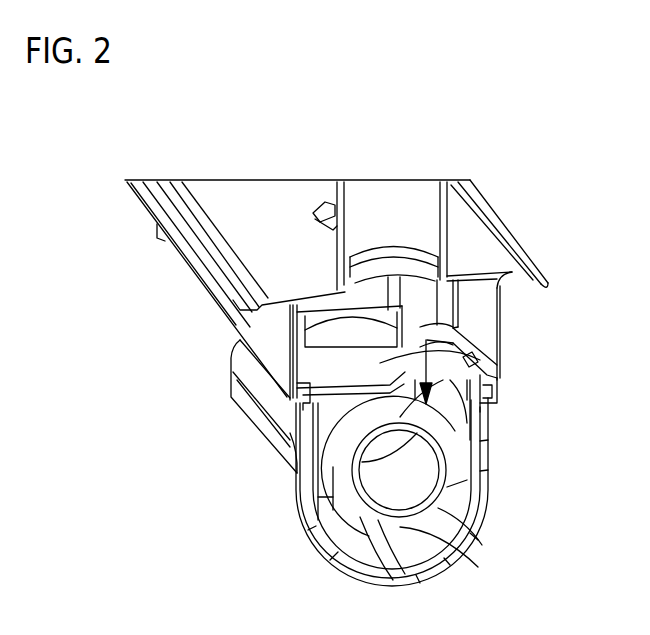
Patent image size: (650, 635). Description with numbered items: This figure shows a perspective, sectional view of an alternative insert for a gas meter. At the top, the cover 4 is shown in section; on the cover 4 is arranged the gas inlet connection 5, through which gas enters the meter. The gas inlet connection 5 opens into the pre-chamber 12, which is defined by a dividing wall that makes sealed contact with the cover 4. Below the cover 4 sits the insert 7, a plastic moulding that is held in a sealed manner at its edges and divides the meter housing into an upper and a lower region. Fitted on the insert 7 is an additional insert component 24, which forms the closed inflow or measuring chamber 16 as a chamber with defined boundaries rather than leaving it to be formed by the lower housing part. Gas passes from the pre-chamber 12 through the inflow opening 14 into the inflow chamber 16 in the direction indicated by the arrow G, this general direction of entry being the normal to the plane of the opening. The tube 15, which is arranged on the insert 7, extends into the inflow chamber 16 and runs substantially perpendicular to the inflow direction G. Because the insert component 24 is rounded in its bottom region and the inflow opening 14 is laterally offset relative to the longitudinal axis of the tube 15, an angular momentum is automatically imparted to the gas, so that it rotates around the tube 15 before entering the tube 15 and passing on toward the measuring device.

The cover 4 is at (485, 245).
The gas inlet connection 5 is at (447, 230).
The insert 7 is at (503, 340).
The pre-chamber 12 is at (478, 298).
The inflow opening 14 is at (437, 372).
The tube 15 is at (343, 452).
The inflow chamber 16 is at (467, 523).
The insert component 24 is at (487, 482).
The arrow indicating inflow direction G is at (498, 360).